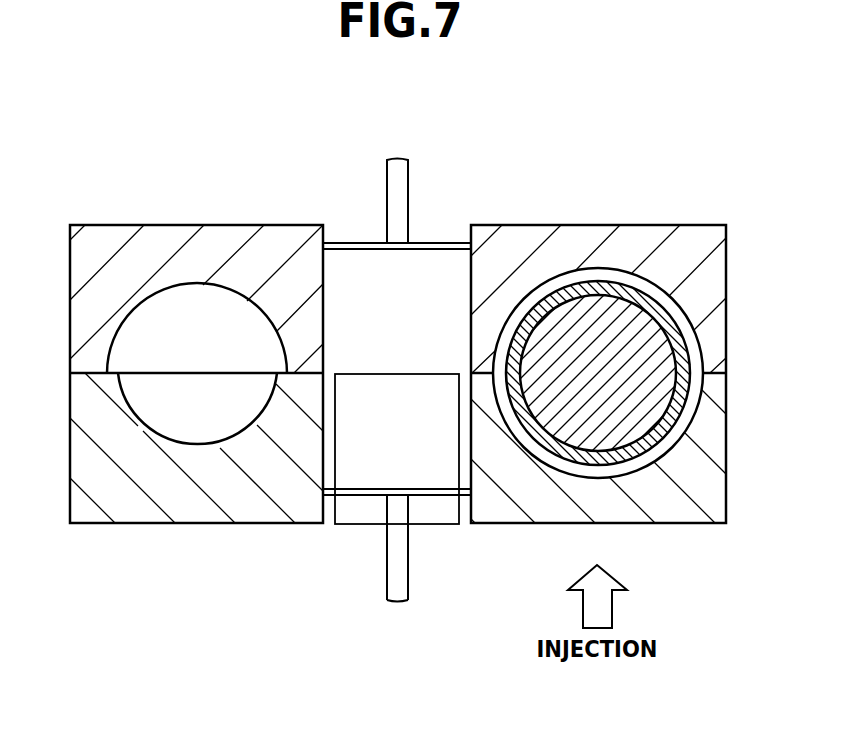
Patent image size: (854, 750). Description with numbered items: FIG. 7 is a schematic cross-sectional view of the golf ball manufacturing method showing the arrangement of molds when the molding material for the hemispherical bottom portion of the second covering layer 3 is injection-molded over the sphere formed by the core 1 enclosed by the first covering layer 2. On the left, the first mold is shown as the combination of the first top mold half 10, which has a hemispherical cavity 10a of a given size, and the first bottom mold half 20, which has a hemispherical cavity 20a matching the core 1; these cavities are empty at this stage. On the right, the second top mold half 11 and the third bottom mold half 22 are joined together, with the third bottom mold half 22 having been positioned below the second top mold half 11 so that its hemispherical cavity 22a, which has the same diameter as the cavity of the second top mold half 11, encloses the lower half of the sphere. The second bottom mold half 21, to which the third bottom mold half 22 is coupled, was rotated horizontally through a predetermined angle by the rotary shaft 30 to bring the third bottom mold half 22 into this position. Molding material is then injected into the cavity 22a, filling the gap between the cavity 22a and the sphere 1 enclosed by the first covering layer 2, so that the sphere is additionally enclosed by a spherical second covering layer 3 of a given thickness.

The core 1 is at (603, 415).
The first covering layer 2 is at (557, 448).
The second covering layer 3 is at (553, 292).
The first top mold half 10 is at (131, 231).
The hemispherical cavity 10a is at (198, 310).
The second top mold half 11 is at (683, 237).
The first bottom mold half 20 is at (110, 502).
The hemispherical cavity 20a is at (203, 427).
The second bottom mold half 21 is at (365, 510).
The third bottom mold half 22 is at (690, 497).
The hemispherical cavity 22a is at (640, 463).
The rotary shaft 30 is at (400, 172).